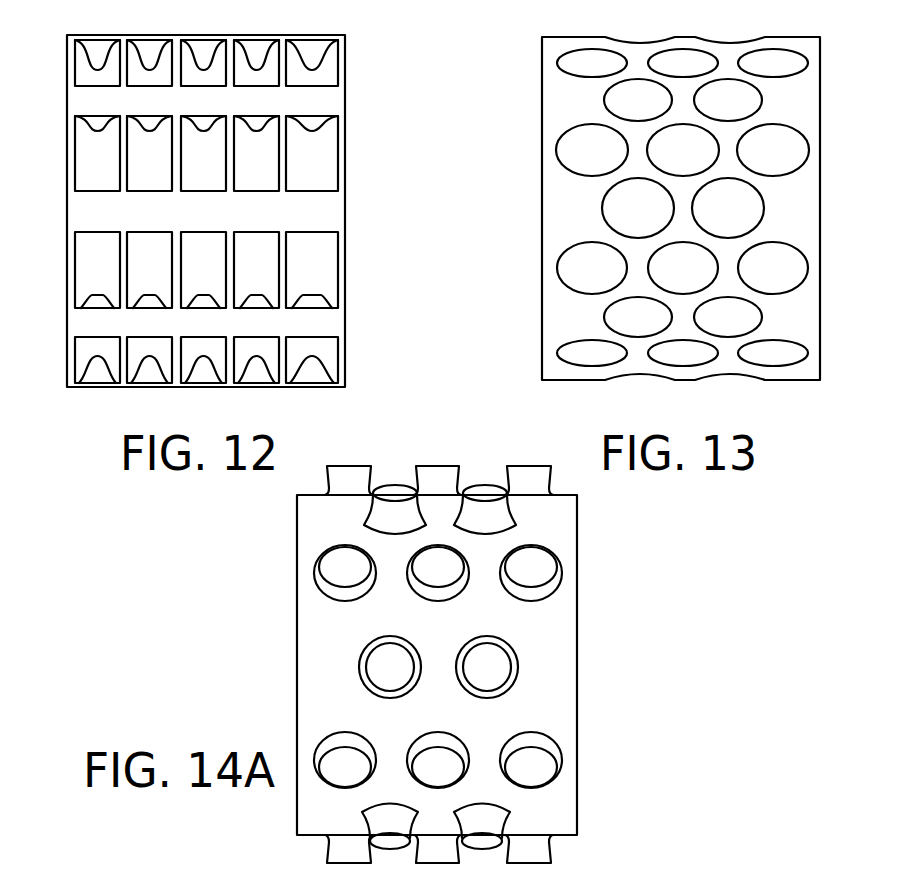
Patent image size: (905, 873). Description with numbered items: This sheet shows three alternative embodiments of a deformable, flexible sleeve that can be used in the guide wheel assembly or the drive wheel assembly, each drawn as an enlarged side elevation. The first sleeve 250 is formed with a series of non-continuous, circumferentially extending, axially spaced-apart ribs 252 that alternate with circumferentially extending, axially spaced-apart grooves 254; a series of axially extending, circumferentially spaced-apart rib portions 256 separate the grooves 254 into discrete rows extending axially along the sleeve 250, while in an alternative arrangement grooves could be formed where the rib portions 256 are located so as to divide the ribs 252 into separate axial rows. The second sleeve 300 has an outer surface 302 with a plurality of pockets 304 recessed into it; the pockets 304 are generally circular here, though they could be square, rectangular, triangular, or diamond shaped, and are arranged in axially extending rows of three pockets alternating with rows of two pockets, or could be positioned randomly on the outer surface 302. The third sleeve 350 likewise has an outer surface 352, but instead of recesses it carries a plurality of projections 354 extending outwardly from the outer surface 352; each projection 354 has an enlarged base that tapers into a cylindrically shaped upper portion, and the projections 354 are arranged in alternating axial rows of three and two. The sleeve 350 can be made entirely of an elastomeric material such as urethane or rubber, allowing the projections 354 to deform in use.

In FIG. 12, the deformable sleeve 250 is at (362, 39).
In FIG. 12, the ribs 252 is at (172, 50).
In FIG. 12, the grooves 254 is at (260, 155).
In FIG. 12, the rib portions 256 is at (327, 99).
In FIG. 13, the deformable sleeve 300 is at (524, 39).
In FIG. 13, the outer surface 302 is at (797, 202).
In FIG. 13, the pockets 304 is at (728, 43).
In FIG. 14A, the deformable sleeve 350 is at (600, 560).
In FIG. 14A, the outer surface 352 is at (548, 667).
In FIG. 14A, the projections 354 is at (523, 470).